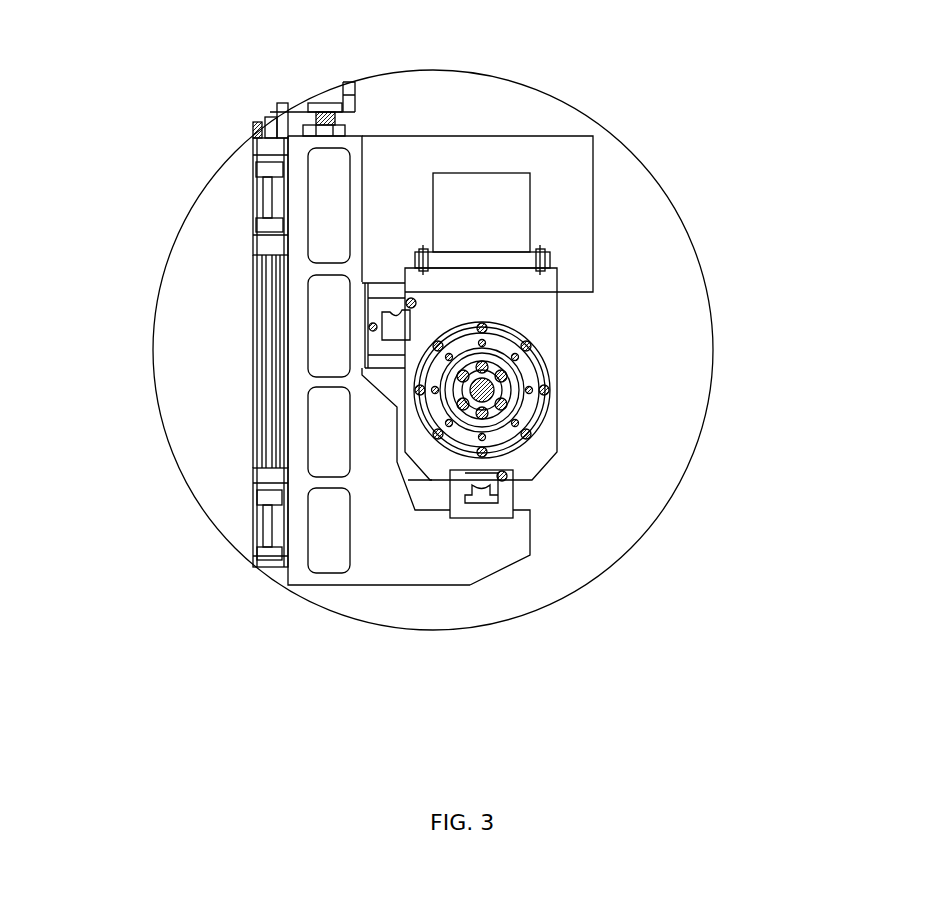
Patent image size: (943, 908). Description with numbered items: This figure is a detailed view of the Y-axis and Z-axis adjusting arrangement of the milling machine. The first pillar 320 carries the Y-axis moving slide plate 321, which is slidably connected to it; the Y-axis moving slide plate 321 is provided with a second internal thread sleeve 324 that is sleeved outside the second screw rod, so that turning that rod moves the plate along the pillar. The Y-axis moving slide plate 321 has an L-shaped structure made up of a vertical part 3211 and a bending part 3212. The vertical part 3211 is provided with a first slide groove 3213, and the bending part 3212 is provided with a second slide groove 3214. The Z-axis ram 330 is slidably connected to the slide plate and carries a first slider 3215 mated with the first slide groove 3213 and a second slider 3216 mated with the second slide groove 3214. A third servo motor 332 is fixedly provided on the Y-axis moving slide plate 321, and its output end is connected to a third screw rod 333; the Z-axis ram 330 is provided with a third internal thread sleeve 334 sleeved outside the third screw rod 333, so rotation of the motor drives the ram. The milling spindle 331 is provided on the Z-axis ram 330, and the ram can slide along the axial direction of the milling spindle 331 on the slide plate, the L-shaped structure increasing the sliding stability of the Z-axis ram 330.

The first pillar 320 is at (192, 322).
The Y-axis moving slide plate 321 is at (395, 450).
The vertical part 3211 is at (317, 555).
The bending part 3212 is at (462, 555).
The first slide groove 3213 is at (372, 310).
The second slide groove 3214 is at (480, 510).
The first slider 3215 is at (403, 333).
The second slider 3216 is at (485, 492).
The second internal thread sleeve 324 is at (266, 193).
The third screw rod 333 is at (258, 290).
The Z-axis ram 330 is at (540, 335).
The milling spindle 331 is at (497, 380).
The third servo motor 332 is at (575, 203).
The third internal thread sleeve 334 is at (485, 193).